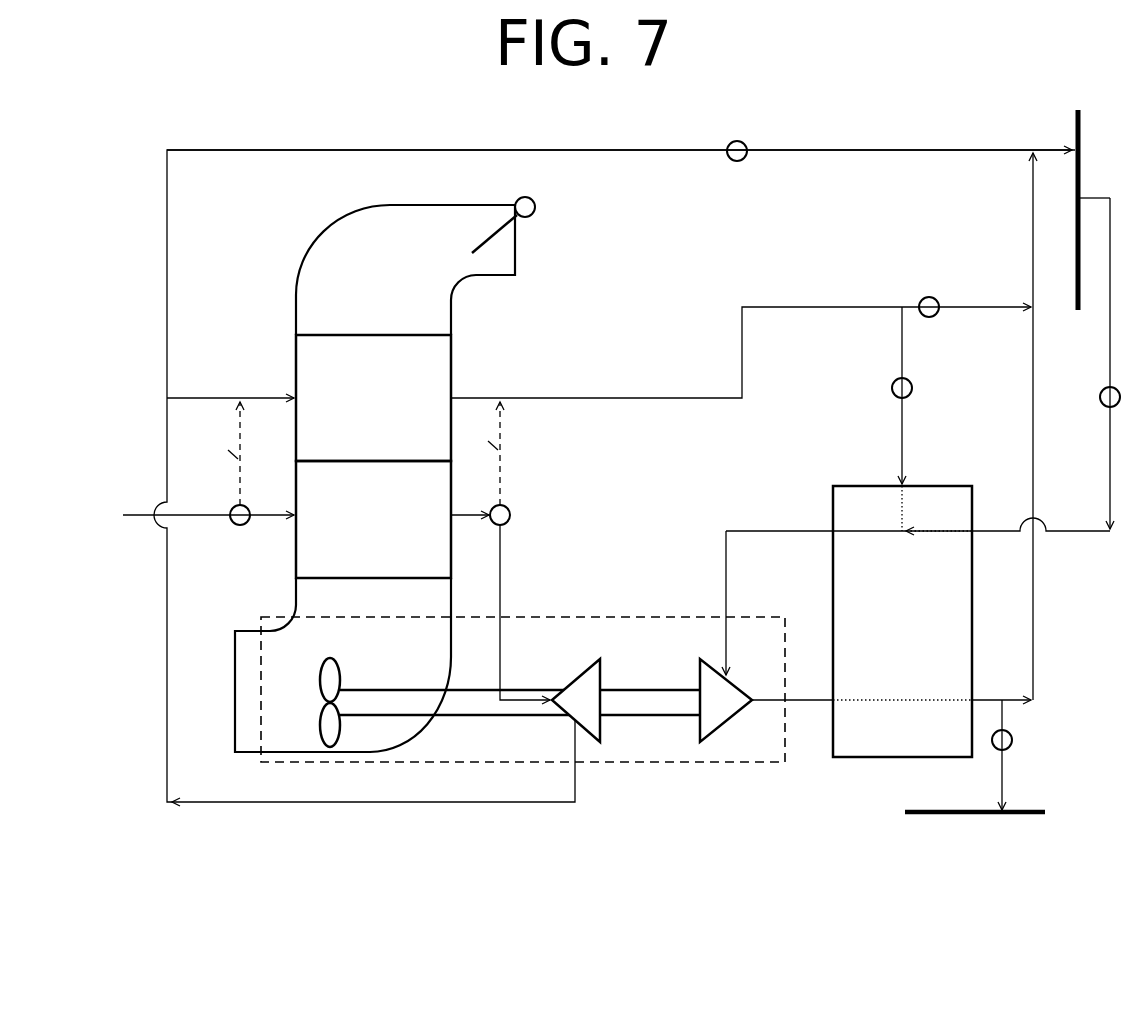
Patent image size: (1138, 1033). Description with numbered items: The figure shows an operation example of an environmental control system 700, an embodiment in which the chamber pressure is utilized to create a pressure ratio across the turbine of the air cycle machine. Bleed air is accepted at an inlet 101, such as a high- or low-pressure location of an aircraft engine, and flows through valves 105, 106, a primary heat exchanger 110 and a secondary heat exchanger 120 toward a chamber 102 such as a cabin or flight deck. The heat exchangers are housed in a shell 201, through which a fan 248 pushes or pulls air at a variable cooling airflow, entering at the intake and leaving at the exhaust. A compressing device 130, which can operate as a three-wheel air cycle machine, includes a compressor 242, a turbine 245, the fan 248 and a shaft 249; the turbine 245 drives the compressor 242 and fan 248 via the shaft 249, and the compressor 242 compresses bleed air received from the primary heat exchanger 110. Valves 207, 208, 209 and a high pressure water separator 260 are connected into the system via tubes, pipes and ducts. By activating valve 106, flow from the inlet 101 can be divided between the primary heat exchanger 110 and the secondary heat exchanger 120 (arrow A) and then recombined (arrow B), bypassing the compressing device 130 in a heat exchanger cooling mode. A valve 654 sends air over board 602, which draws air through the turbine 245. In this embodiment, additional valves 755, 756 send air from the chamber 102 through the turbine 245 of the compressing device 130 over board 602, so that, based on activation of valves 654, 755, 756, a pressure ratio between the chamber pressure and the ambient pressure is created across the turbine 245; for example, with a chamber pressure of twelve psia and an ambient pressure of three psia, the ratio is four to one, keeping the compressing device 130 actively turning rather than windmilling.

The environmental control system 700 is at (157, 78).
The chamber 102 is at (1078, 183).
The inlet 101 is at (181, 517).
The valve 105 is at (233, 508).
The valve 106 is at (509, 508).
The primary heat exchanger 110 is at (373, 519).
The secondary heat exchanger 120 is at (373, 398).
The compressing device 130 is at (260, 617).
The shell 201 is at (295, 320).
The valve 207 is at (536, 205).
The valve 208 is at (744, 159).
The valve 209 is at (936, 315).
The compressor 242 is at (576, 700).
The turbine 245 is at (726, 700).
The fan 248 is at (340, 667).
The shaft 249 is at (467, 717).
The high pressure water separator 260 is at (891, 621).
The over board 602 is at (937, 800).
The valve 654 is at (1009, 748).
The valve 755 is at (1103, 405).
The valve 756 is at (909, 396).